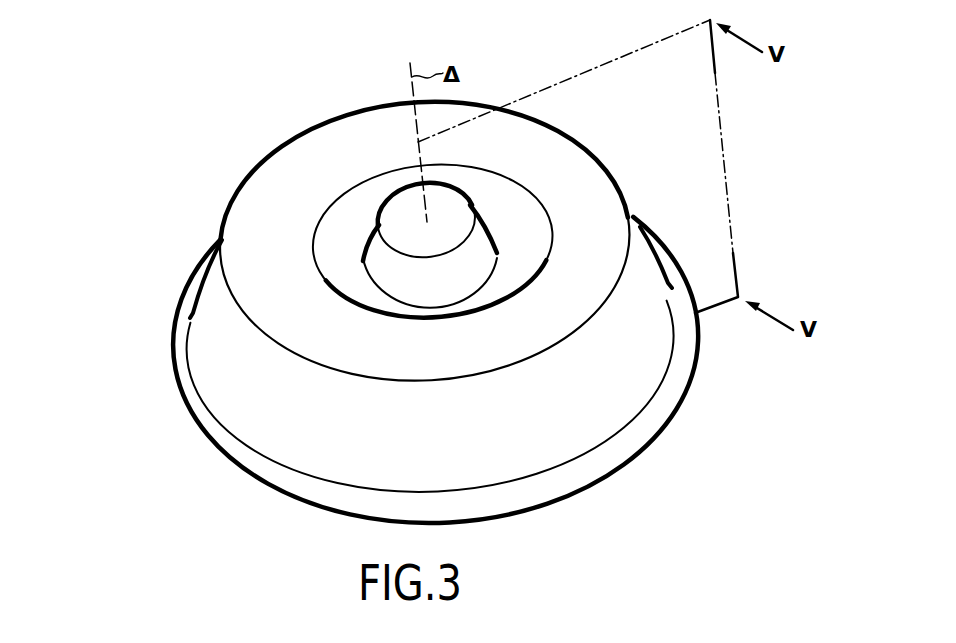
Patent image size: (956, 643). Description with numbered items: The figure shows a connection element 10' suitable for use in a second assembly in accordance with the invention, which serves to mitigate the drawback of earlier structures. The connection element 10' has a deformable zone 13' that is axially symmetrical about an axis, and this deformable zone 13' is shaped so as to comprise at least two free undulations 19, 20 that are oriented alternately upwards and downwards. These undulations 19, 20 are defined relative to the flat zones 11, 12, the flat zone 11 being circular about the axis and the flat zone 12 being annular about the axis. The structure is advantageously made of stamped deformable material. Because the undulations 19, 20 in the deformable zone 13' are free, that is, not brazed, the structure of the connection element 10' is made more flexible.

The connection element 10' is at (411, 312).
The flat zone 11 is at (441, 214).
The flat zone 12 is at (190, 427).
The deformable zone 13' is at (457, 396).
The free undulation 19 is at (506, 245).
The free undulation 20 is at (333, 162).